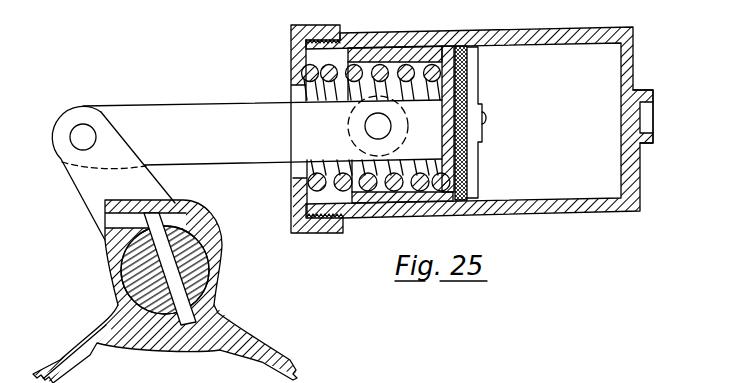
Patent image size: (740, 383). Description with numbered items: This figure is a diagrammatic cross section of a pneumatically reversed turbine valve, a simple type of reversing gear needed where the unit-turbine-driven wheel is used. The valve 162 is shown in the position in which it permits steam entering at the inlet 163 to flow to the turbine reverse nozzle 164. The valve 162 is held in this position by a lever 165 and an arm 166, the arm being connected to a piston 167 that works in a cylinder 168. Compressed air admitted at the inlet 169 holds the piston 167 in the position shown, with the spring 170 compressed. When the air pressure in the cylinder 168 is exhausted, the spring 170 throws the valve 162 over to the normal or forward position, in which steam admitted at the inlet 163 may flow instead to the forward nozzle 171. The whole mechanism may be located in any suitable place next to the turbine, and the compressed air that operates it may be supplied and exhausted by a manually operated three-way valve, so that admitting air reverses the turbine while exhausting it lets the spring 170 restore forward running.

The valve 162 is at (190, 260).
The steam inlet 163 is at (120, 220).
The reverse nozzle 164 is at (222, 343).
The lever 165 is at (104, 176).
The arm 166 is at (247, 168).
The piston 167 is at (470, 84).
The cylinder 168 is at (570, 43).
The compressed air inlet 169 is at (637, 120).
The spring 170 is at (331, 68).
The forward nozzle 171 is at (122, 343).